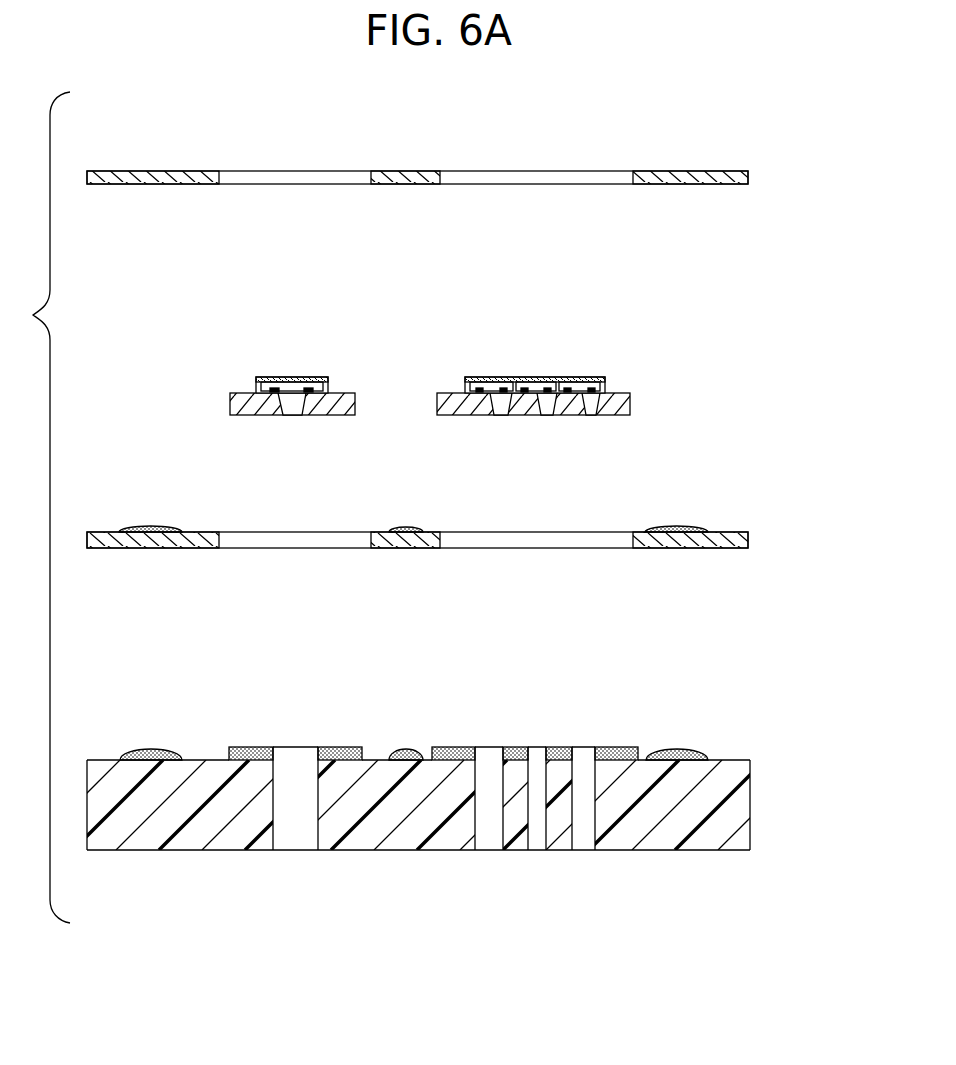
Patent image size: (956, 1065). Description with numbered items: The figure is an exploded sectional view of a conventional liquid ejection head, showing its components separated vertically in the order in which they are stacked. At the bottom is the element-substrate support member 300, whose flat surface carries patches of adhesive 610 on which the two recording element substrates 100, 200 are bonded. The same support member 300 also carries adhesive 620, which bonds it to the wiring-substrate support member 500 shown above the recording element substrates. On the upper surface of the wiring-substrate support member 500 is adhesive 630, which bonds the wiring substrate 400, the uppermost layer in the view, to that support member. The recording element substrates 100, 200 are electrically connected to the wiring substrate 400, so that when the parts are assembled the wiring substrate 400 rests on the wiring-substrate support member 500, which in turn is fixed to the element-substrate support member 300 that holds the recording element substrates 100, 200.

The recording element substrate 100 is at (334, 344).
The recording element substrate 200 is at (602, 344).
The element-substrate support member 300 is at (737, 820).
The wiring substrate 400 is at (720, 171).
The wiring-substrate support member 500 is at (740, 537).
The adhesive 610 is at (245, 747).
The adhesive 620 is at (150, 749).
The adhesive 630 is at (150, 529).